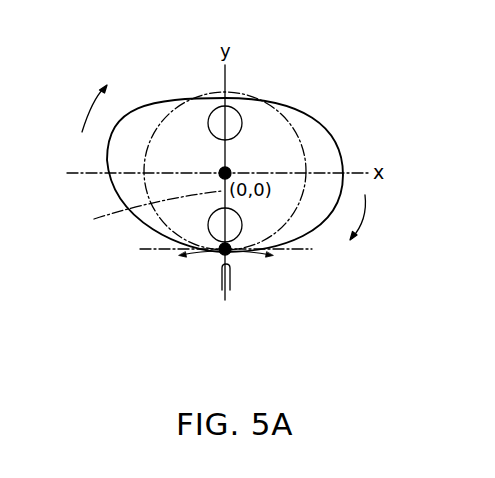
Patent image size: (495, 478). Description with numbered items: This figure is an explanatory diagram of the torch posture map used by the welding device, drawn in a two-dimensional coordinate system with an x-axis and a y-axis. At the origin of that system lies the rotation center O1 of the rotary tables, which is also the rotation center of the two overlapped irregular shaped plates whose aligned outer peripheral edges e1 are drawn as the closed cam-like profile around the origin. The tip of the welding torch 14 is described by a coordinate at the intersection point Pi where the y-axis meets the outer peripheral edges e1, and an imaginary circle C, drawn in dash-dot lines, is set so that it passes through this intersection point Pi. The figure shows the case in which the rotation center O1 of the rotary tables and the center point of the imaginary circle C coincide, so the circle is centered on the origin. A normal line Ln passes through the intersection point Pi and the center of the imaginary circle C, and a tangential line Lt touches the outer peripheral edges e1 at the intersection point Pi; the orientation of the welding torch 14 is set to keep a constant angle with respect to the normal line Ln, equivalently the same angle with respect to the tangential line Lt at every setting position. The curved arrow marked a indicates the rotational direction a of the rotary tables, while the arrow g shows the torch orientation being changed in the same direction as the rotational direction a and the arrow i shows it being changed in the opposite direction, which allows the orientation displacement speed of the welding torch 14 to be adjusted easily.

The welding torch 14 is at (219, 276).
The outer peripheral edge e1 is at (312, 106).
The imaginary circle C is at (303, 143).
The rotation center O1 is at (221, 166).
The normal line Ln is at (144, 210).
The tangential line Lt is at (160, 250).
The intersection point Pi is at (230, 255).
The arrow g is at (193, 262).
The arrow i is at (250, 260).
The rotational direction a is at (91, 108).